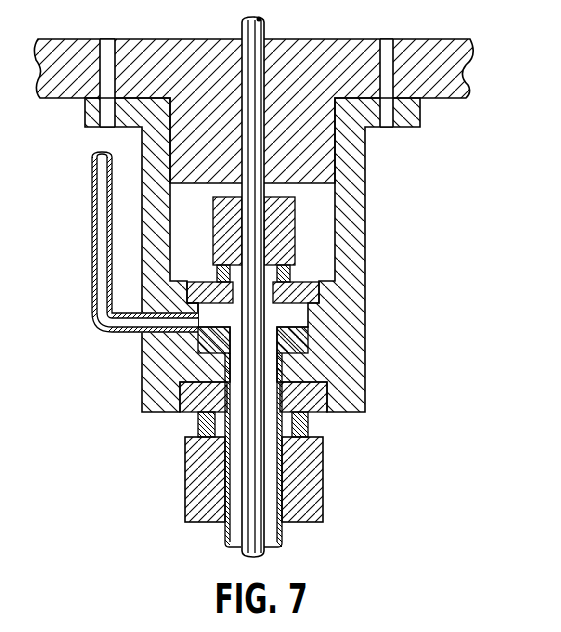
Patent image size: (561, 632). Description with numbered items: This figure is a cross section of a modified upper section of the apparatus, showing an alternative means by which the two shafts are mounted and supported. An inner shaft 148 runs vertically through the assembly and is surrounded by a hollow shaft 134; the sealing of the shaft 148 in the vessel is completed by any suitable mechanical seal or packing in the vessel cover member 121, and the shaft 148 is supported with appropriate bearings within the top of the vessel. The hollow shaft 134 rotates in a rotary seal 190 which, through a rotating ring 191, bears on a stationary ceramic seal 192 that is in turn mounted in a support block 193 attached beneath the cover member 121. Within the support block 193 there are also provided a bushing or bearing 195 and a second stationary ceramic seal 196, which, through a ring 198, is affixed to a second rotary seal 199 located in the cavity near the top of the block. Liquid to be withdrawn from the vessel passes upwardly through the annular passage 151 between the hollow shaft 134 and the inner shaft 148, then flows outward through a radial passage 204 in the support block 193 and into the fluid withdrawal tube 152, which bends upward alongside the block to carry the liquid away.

The vessel cover member 121 is at (457, 72).
The hollow shaft 134 is at (282, 537).
The shaft 148 is at (252, 463).
The annular passage 151 is at (238, 532).
The fluid withdrawal tube 152 is at (100, 264).
The rotary seal 190 is at (318, 486).
The rotating ring 191 is at (308, 428).
The stationary ceramic seal 192 is at (327, 390).
The support block 193 is at (352, 286).
The bushing or bearing 195 is at (300, 334).
The second stationary ceramic seal 196 is at (321, 292).
The ring 198 is at (290, 270).
The second rotary seal 199 is at (290, 226).
The radial passage 204 is at (212, 313).